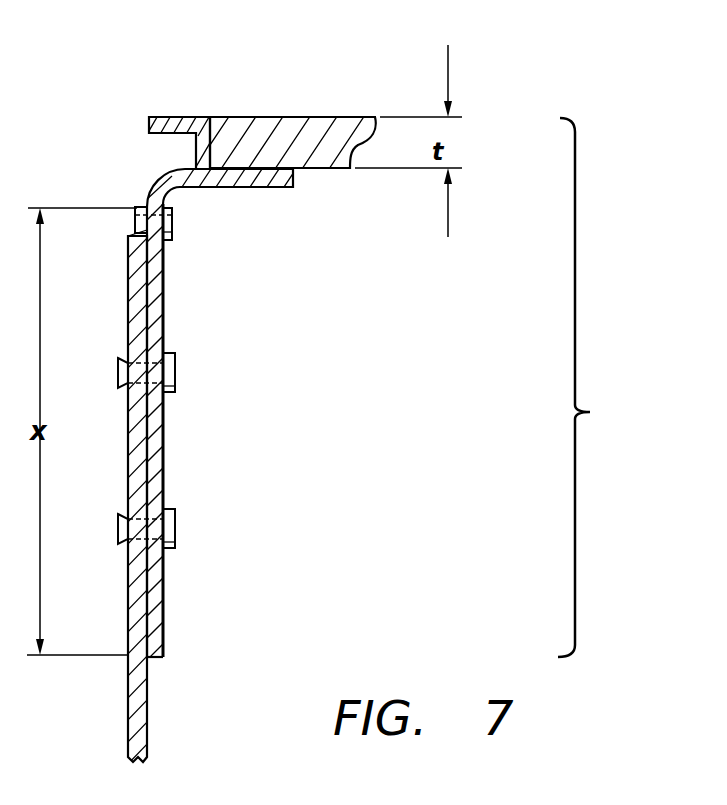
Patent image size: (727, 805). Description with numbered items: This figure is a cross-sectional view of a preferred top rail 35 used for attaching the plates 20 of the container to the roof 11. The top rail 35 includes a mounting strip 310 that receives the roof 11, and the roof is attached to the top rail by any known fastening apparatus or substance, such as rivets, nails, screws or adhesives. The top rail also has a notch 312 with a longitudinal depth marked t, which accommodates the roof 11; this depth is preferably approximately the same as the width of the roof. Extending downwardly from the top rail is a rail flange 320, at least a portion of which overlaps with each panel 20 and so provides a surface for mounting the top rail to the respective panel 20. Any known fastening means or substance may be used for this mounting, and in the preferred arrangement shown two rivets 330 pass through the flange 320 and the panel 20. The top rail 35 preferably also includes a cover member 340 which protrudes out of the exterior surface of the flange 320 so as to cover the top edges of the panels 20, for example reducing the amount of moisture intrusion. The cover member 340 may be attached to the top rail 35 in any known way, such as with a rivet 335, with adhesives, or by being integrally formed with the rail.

The roof 11 is at (310, 116).
The notch 312 is at (217, 150).
The mounting strip 310 is at (207, 188).
The rail flange 320 is at (165, 608).
The plate 20 is at (129, 685).
The cover member 340 is at (130, 236).
The rivet 335 is at (173, 227).
The rivets 330 is at (176, 375).
The top rail 35 is at (596, 387).